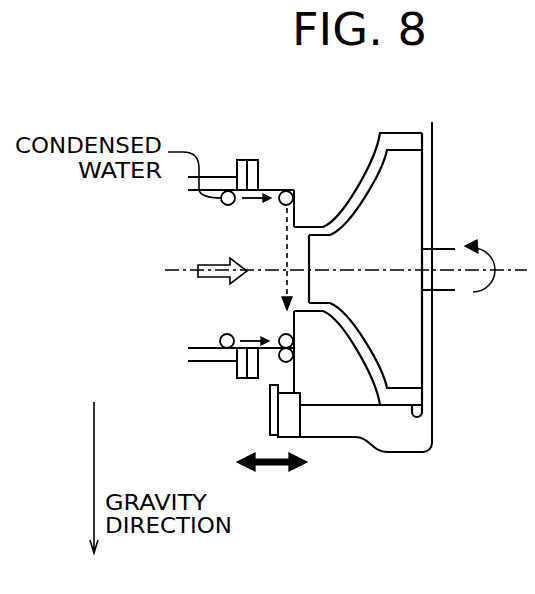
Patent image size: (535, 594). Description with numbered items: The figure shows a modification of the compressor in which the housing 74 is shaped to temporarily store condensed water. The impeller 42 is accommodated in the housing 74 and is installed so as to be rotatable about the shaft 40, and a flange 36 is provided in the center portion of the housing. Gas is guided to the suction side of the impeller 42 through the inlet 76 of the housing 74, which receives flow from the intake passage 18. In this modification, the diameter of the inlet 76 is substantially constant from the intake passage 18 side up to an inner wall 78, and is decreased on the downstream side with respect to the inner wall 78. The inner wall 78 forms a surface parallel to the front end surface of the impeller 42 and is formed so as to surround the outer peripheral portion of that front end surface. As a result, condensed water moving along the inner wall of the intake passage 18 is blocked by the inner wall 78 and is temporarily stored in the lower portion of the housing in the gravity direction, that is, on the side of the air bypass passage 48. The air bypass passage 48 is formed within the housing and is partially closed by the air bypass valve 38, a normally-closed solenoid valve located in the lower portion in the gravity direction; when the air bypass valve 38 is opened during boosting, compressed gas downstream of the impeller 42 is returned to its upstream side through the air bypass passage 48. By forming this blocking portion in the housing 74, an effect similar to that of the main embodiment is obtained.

The intake passage 18 is at (201, 177).
The flange 36 is at (252, 160).
The air bypass valve 38 is at (294, 413).
The shaft 40 is at (443, 249).
The impeller 42 is at (406, 150).
The air bypass passage 48 is at (283, 364).
The housing 74 is at (412, 452).
The inlet 76 is at (264, 297).
The inner wall 78 is at (296, 215).